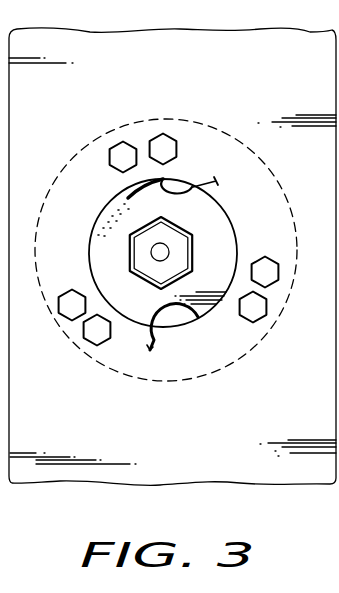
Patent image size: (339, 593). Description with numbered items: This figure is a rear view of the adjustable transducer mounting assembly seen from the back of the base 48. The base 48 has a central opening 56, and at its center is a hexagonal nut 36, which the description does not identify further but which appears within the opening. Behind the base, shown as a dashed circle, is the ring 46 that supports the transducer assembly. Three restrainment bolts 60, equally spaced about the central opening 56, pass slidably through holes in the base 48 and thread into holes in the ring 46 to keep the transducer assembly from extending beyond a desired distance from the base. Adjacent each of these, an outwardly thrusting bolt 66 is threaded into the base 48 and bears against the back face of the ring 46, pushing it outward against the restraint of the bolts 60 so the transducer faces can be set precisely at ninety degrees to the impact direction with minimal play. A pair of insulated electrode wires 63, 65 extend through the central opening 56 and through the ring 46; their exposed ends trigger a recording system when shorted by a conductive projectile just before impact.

The center nut 36 is at (158, 238).
The ring 46 is at (59, 166).
The base 48 is at (110, 441).
The central opening 56 is at (244, 247).
The restrainment bolts 60 is at (162, 147).
The insulated electrode wire 63 is at (157, 333).
The insulated electrode wire 65 is at (186, 189).
The outwardly thrusting bolts 66 is at (120, 150).